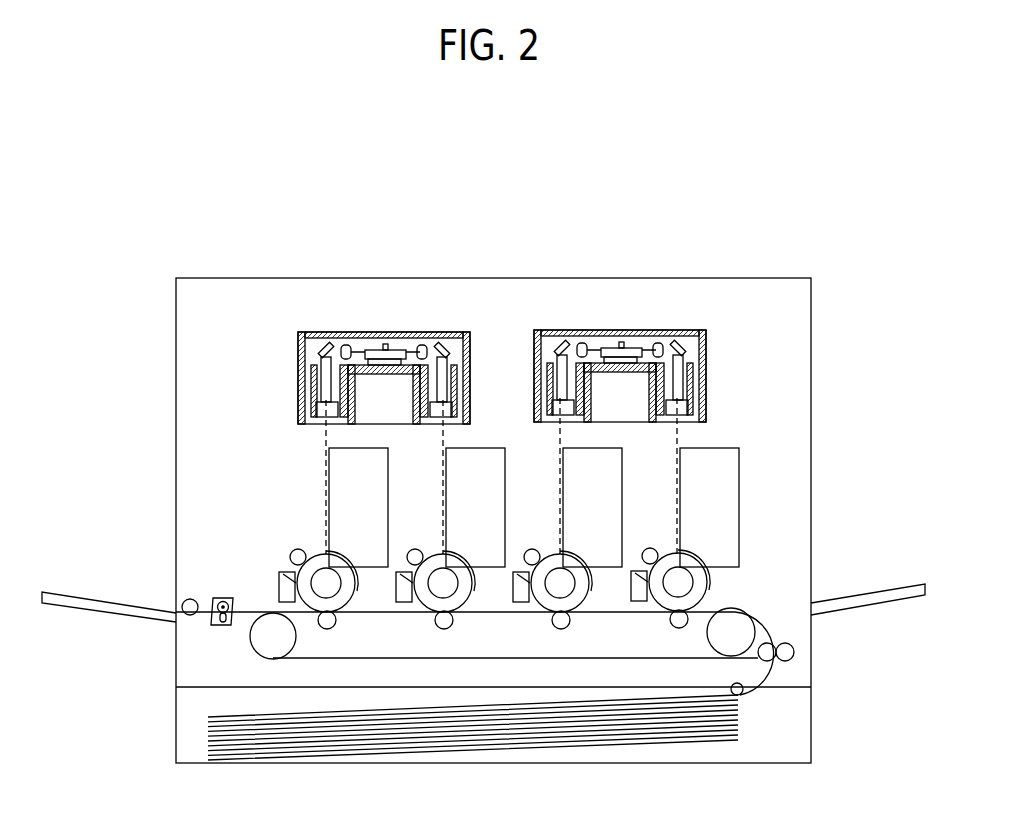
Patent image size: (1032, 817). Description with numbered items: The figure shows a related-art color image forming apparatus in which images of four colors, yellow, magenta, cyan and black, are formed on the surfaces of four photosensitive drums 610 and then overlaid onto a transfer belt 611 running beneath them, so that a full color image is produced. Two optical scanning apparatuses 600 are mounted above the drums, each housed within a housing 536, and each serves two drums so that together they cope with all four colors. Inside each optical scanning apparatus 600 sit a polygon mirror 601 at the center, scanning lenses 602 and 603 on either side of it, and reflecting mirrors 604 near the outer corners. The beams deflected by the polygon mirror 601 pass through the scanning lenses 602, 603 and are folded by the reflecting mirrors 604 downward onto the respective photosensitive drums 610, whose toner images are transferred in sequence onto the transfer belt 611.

The optical scanning apparatus 600 is at (499, 343).
The housing 536 is at (460, 331).
The polygon mirror 601 is at (397, 342).
The scanning lens 602 is at (340, 338).
The scanning lens 603 is at (318, 404).
The reflecting mirror 604 is at (323, 337).
The photosensitive drum 610 is at (322, 560).
The transfer belt 611 is at (383, 659).